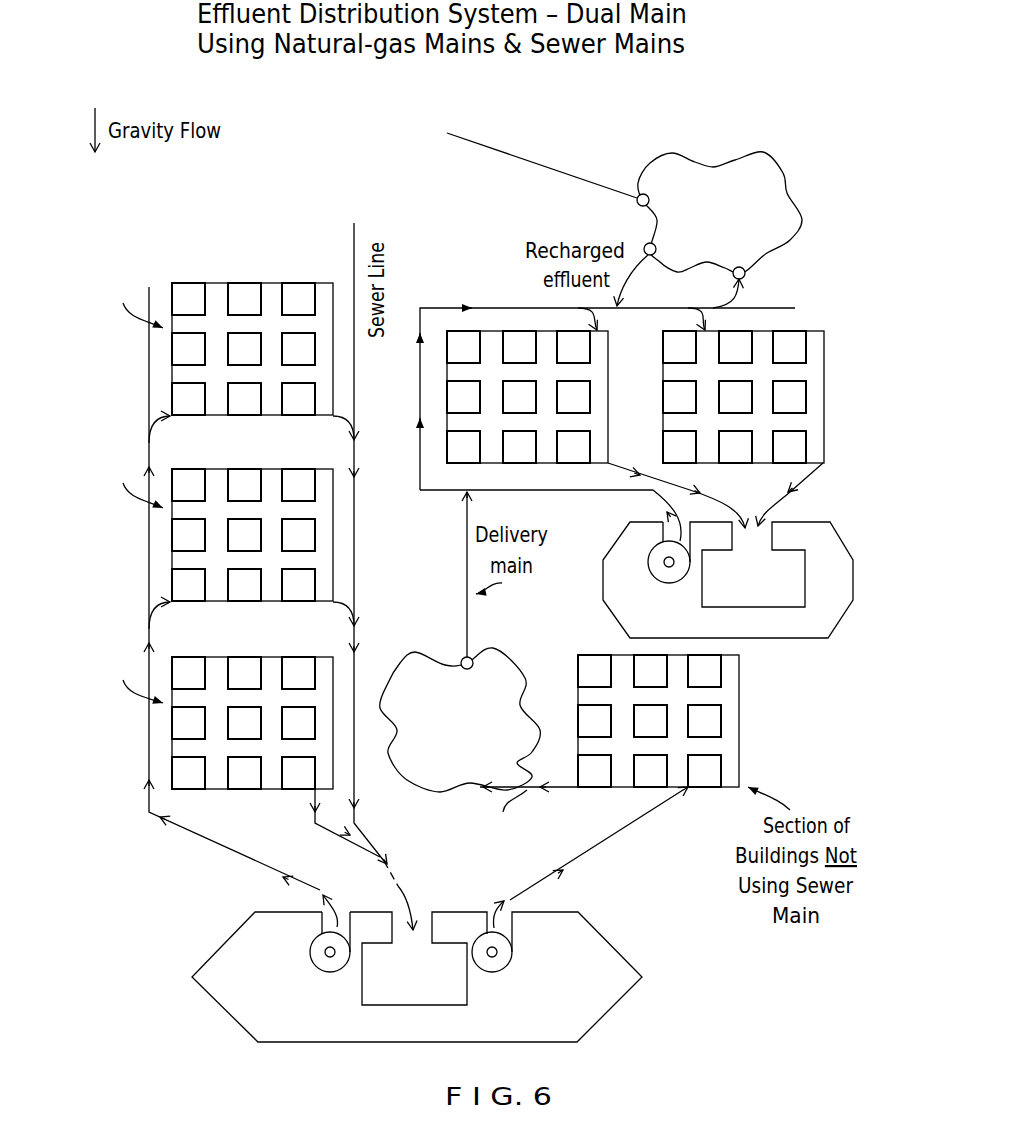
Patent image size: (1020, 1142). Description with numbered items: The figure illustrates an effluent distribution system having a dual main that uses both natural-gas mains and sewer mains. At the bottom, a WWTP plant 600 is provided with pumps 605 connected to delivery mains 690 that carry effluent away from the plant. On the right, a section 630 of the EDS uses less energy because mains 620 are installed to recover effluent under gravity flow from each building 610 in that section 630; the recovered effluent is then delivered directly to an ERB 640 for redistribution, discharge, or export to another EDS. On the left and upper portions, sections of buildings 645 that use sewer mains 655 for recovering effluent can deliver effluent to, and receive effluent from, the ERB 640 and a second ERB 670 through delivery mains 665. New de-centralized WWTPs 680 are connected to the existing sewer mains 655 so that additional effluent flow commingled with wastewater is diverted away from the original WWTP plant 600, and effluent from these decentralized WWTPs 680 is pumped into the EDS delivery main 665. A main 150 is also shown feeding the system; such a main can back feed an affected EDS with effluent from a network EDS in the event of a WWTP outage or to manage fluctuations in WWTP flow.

The main 150 is at (515, 155).
The WWTP plant 600 is at (587, 1022).
The pumps 605 is at (311, 952).
The building 610 is at (597, 658).
The mains 620 is at (573, 786).
The section 630 is at (733, 743).
The ERB 640 is at (460, 720).
The sections of buildings 645 is at (213, 290).
The sewer mains 655 is at (355, 542).
The delivery mains 665 is at (500, 307).
The ERB 670 is at (782, 172).
The de-centralized WWTPs 680 is at (808, 630).
The delivery mains 690 is at (187, 833).